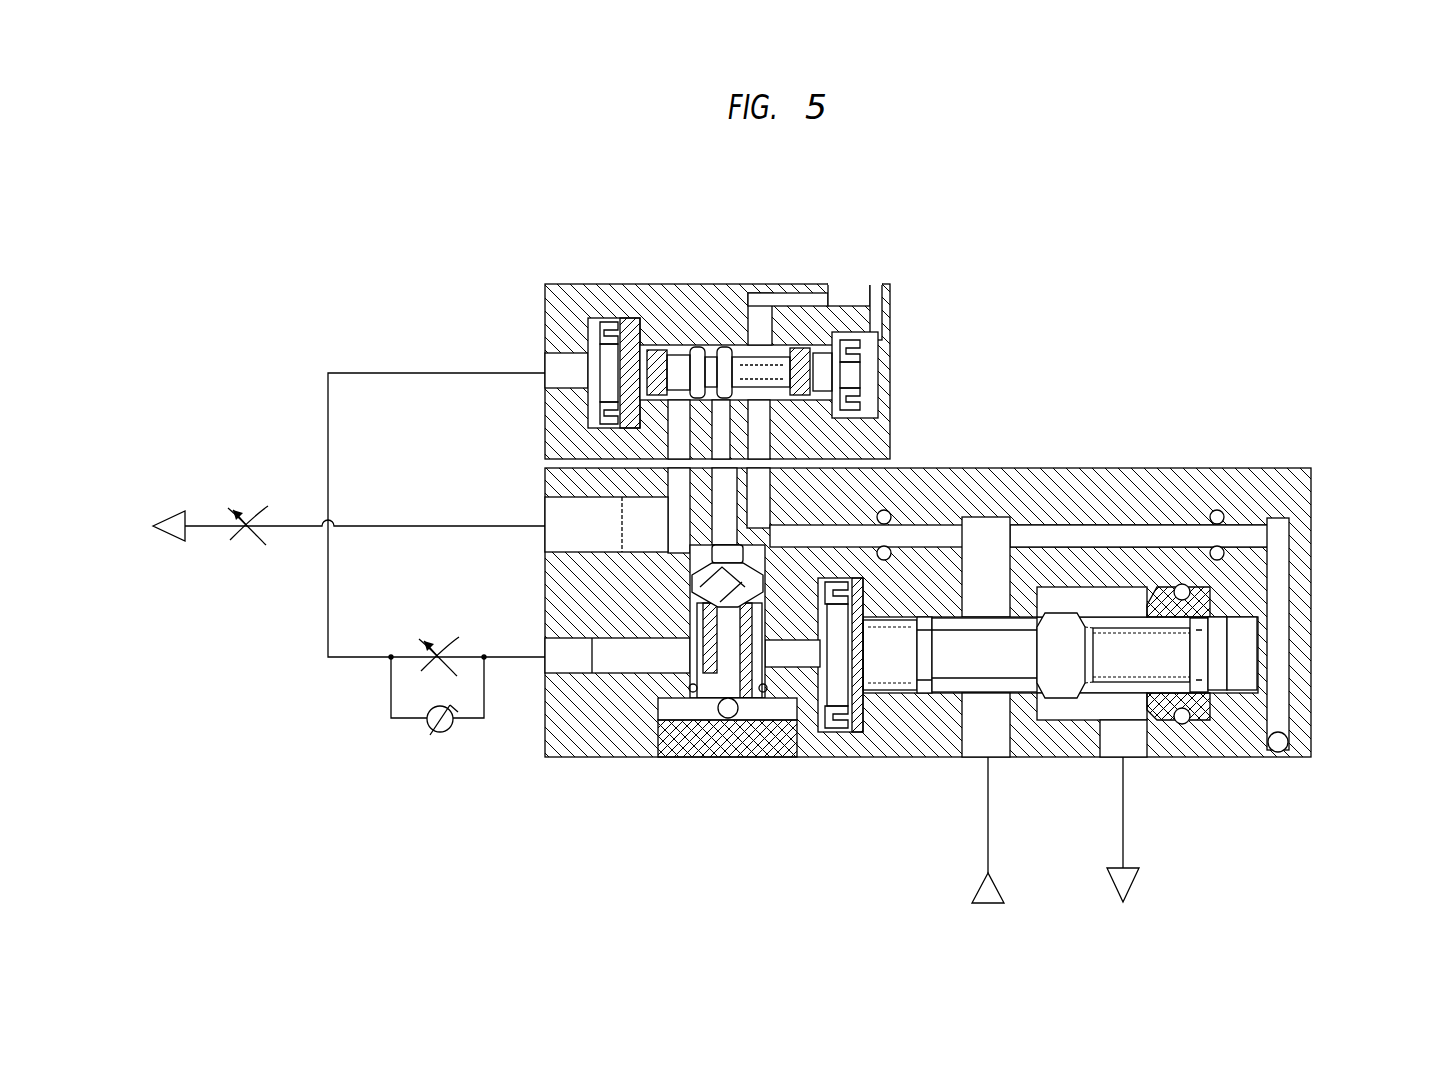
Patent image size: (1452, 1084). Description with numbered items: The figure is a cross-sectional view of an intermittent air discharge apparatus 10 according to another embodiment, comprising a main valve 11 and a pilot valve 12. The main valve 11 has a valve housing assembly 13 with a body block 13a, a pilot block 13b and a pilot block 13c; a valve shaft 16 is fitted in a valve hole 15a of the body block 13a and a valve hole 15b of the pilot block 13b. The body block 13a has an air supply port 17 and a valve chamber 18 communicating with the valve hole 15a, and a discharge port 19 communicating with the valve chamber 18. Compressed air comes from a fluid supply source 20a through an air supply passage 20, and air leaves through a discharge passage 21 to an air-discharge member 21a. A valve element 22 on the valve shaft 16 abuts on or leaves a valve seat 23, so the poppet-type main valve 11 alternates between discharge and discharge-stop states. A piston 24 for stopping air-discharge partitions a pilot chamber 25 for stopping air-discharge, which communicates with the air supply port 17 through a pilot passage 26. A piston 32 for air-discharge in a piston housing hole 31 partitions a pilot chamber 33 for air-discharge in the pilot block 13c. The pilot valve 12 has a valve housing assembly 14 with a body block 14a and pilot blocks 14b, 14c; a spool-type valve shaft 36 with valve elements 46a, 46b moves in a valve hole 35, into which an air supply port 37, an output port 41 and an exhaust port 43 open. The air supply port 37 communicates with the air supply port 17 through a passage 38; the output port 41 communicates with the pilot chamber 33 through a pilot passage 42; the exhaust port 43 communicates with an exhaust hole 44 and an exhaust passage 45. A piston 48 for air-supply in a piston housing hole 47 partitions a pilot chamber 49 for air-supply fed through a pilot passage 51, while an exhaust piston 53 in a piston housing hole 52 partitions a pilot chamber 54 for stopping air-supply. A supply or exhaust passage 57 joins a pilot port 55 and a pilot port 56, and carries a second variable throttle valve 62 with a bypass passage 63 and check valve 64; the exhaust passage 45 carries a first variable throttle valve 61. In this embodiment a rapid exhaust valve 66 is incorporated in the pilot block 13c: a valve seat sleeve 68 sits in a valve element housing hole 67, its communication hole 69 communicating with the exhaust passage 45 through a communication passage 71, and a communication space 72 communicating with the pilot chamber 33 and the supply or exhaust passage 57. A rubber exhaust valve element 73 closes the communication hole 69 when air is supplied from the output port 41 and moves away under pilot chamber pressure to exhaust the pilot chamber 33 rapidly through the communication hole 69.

The intermittent air discharge apparatus 10 is at (1289, 292).
The main valve 11 is at (1310, 458).
The pilot valve 12 is at (886, 276).
The valve housing assembly 13 is at (1157, 458).
The body block 13a is at (1080, 468).
The pilot block 13b is at (1300, 590).
The pilot block 13c is at (620, 757).
The valve housing assembly 14 is at (765, 276).
The body block 14a is at (713, 284).
The pilot block 14b is at (884, 292).
The pilot block 14c is at (557, 284).
The valve hole 15a is at (948, 757).
The valve hole 15b is at (1242, 757).
The valve shaft 16 is at (1147, 757).
The air supply port 17 is at (1003, 758).
The valve chamber 18 is at (1123, 600).
The discharge port 19 is at (1107, 757).
The air supply passage 20 is at (990, 847).
The fluid supply source 20a is at (1000, 880).
The discharge passage 21 is at (1125, 838).
The air-discharge member 21a is at (1135, 873).
The valve element 22 is at (1053, 757).
The valve seat 23 is at (1057, 600).
The piston for stopping air-discharge 24 is at (1225, 670).
The pilot chamber for stopping air-discharge 25 is at (1256, 628).
The pilot passage 26 is at (1242, 522).
The piston housing hole 31 is at (885, 757).
The piston for air-discharge 32 is at (832, 757).
The pilot chamber for air-discharge 33 is at (800, 745).
The valve hole 35 is at (787, 293).
The valve shaft 36 is at (655, 345).
The air supply port 37 is at (800, 420).
The passage 38 is at (903, 468).
The output port 41 is at (720, 470).
The pilot passage 42 is at (770, 757).
The exhaust port 43 is at (678, 435).
The exhaust hole 44 is at (550, 508).
The exhaust passage 45 is at (412, 526).
The valve element 46a is at (690, 345).
The valve element 46b is at (738, 345).
The piston housing hole 47 is at (880, 332).
The piston for air-supply 48 is at (862, 356).
The pilot chamber for air-supply 49 is at (862, 378).
The pilot passage 51 is at (823, 284).
The piston housing hole 52 is at (588, 318).
The exhaust piston 53 is at (628, 318).
The pilot chamber for stopping air-supply 54 is at (600, 330).
The pilot port 55 is at (548, 368).
The pilot port 56 is at (565, 757).
The supply or exhaust passage 57 is at (326, 378).
The first variable throttle valve 61 is at (247, 520).
The second variable throttle valve 62 is at (438, 650).
The bypass passage 63 is at (391, 690).
The check valve 64 is at (438, 735).
The rapid exhaust valve 66 is at (700, 757).
The valve element housing hole 67 is at (752, 740).
The valve seat sleeve 68 is at (735, 757).
The communication hole 69 is at (722, 740).
The communication passage 71 is at (550, 640).
The communication space 72 is at (695, 725).
The exhaust valve element 73 is at (705, 565).